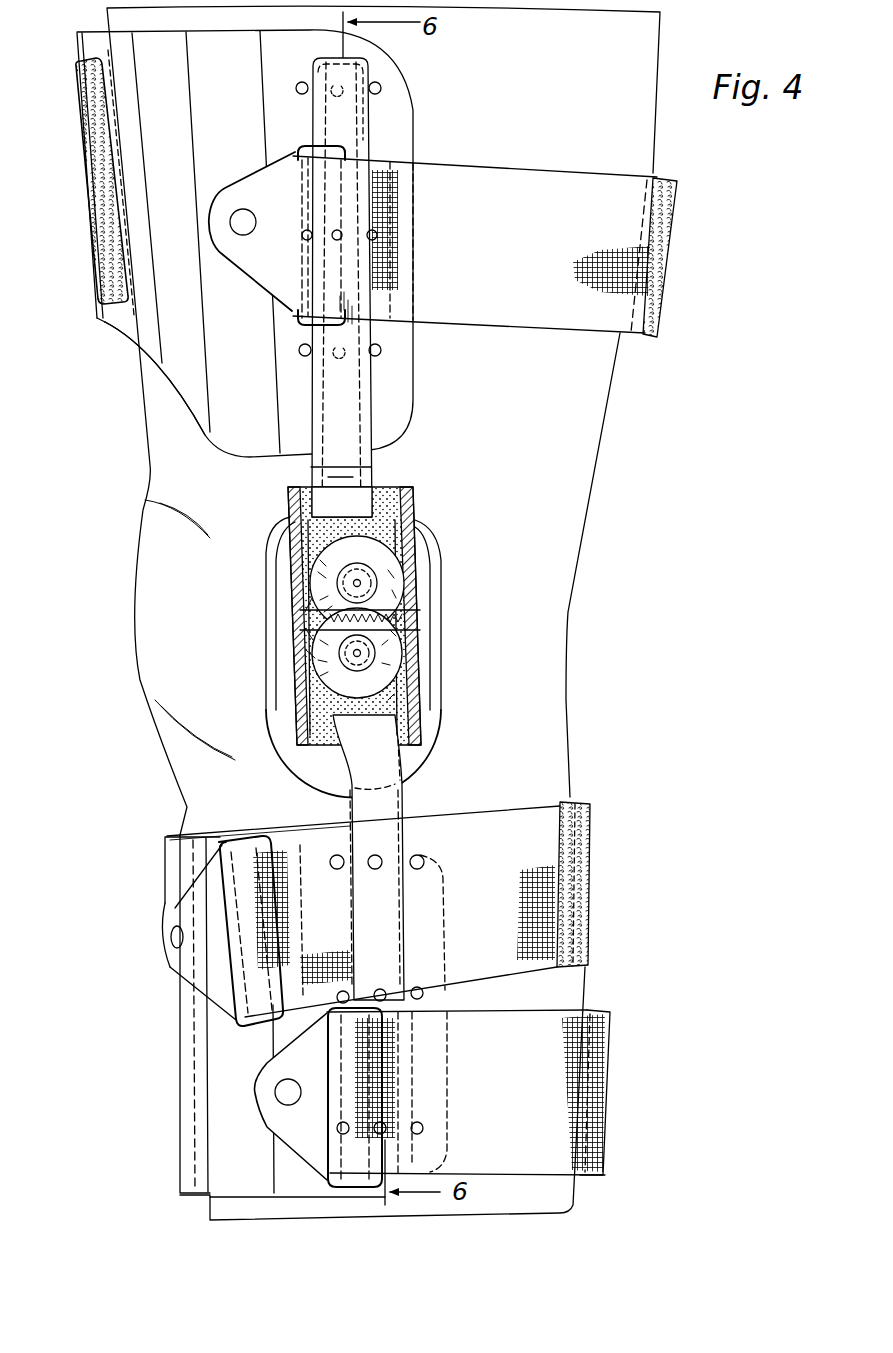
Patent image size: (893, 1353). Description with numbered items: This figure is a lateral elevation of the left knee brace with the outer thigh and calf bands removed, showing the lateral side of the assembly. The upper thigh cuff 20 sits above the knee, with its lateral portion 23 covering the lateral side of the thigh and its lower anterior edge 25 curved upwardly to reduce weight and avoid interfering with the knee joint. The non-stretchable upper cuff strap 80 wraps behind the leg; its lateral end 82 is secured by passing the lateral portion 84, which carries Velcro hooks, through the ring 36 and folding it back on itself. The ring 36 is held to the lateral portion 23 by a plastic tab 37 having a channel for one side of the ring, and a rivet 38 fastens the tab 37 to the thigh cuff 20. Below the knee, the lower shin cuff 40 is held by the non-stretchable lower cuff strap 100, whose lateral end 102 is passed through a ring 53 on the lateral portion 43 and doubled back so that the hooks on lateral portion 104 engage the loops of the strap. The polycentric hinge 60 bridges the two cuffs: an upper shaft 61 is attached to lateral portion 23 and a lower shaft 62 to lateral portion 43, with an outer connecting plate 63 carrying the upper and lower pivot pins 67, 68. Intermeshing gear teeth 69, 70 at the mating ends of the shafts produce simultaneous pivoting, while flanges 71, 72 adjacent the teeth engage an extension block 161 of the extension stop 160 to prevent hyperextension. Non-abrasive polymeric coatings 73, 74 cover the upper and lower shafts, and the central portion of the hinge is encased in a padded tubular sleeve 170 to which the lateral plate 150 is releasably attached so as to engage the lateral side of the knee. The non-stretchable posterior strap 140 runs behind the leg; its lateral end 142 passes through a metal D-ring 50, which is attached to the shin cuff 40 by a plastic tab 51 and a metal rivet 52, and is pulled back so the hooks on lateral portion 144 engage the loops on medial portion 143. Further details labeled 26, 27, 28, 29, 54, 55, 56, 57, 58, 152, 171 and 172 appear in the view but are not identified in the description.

The upper thigh cuff 20 is at (105, 320).
The lateral portion 23 is at (225, 78).
The lower anterior edge 25 is at (162, 363).
The hole 26 is at (300, 86).
The hole 27 is at (333, 90).
The hole 28 is at (381, 92).
The pad 29 is at (92, 205).
The ring 36 is at (310, 145).
The plastic tab 37 is at (260, 175).
The rivet 38 is at (240, 210).
The lower shin cuff 40 is at (241, 1016).
The lateral portion 43 is at (260, 1165).
The metal D-ring 50 is at (191, 903).
The plastic tab 51 is at (203, 910).
The metal rivet 52 is at (170, 936).
The ring 53 is at (322, 1190).
The buckle plate 54 is at (277, 1063).
The rivet hole 55 is at (280, 1092).
The hole 56 is at (330, 858).
The hole 57 is at (372, 855).
The hole 58 is at (423, 857).
The polycentric hinge 60 is at (343, 611).
The upper shaft 61 is at (358, 124).
The lower shaft 62 is at (404, 800).
The outer connecting plate 63 is at (415, 695).
The upper pivot pin 67 is at (350, 576).
The lower pivot pin 68 is at (350, 670).
The gear teeth 69 is at (422, 610).
The gear teeth 70 is at (422, 628).
The flange 71 is at (297, 615).
The flange 72 is at (297, 633).
The polymeric coating 73 is at (365, 70).
The polymeric coating 74 is at (404, 806).
The upper cuff strap 80 is at (504, 250).
The lateral end 82 is at (660, 180).
The lateral portion 84 is at (578, 182).
The lower cuff strap 100 is at (505, 1081).
The lateral end 102 is at (502, 1042).
The lateral portion 104 is at (545, 1034).
The posterior strap 140 is at (416, 884).
The lateral end 142 is at (543, 817).
The medial portion 143 is at (590, 835).
The lateral portion 144 is at (497, 860).
The lateral plate 150 is at (393, 651).
The cover wall 152 is at (425, 540).
The extension stop 160 is at (310, 580).
The extension block 161 is at (297, 625).
The padded tubular sleeve 170 is at (422, 648).
The pad wall 171 is at (415, 488).
The pad foam 172 is at (395, 482).